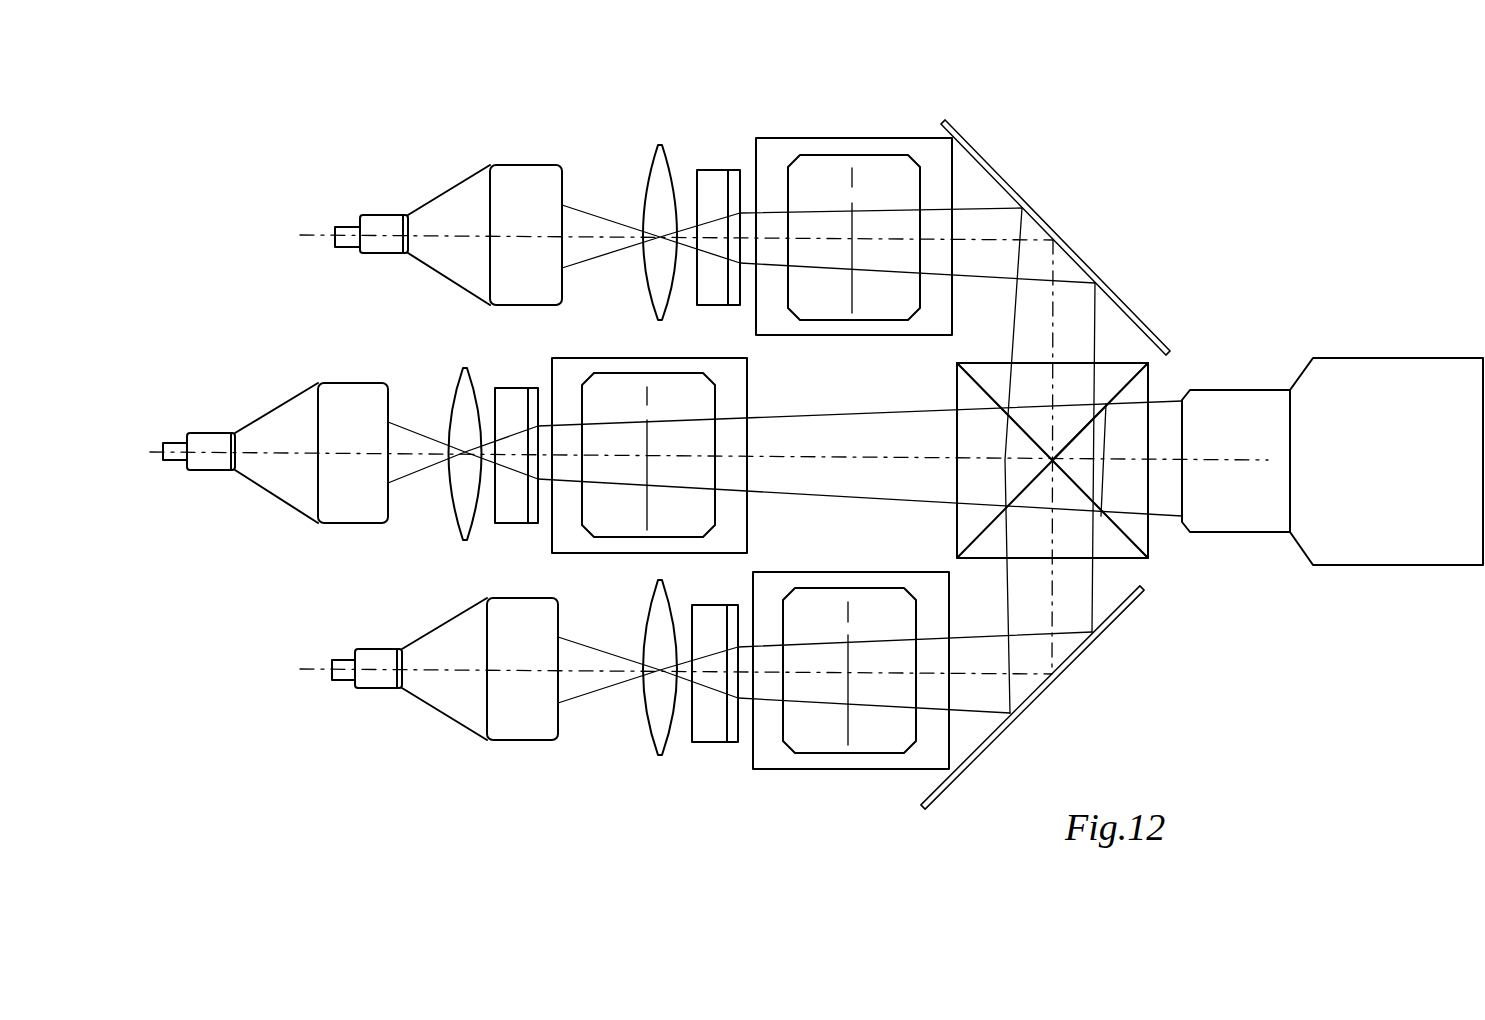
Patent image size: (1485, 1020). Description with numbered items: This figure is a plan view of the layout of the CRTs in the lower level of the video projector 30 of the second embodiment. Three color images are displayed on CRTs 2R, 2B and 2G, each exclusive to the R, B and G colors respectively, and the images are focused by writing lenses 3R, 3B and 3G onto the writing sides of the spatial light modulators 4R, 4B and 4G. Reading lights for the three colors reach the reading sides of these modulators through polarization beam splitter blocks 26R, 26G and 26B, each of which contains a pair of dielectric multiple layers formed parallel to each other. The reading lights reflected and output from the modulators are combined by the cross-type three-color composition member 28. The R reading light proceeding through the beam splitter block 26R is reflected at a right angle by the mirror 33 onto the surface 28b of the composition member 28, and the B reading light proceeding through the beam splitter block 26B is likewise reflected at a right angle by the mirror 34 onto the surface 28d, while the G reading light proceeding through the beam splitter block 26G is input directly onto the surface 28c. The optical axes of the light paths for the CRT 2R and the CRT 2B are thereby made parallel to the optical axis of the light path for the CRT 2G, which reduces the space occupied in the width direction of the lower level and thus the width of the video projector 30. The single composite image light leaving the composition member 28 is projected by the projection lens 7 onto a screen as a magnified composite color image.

The video projector 30 is at (333, 85).
The CRT 2B is at (437, 191).
The writing lens 3B is at (648, 183).
The spatial light modulator 4B is at (715, 170).
The polarization beam splitter block 26B is at (813, 138).
The mirror 34 is at (1003, 177).
The CRT 2G is at (338, 523).
The writing lens 3G is at (457, 507).
The spatial light modulator 4G is at (512, 523).
The polarization beam splitter block 26G is at (560, 553).
The cross-type 3-color composition member 28 is at (1148, 535).
The surface 28b is at (1127, 560).
The surface 28c is at (953, 393).
The surface 28d is at (1130, 362).
The projection lens 7 is at (1335, 565).
The CRT 2R is at (460, 725).
The writing lens 3R is at (647, 718).
The spatial light modulator 4R is at (712, 742).
The polarization beam splitter block 26R is at (770, 769).
The mirror 33 is at (1080, 660).